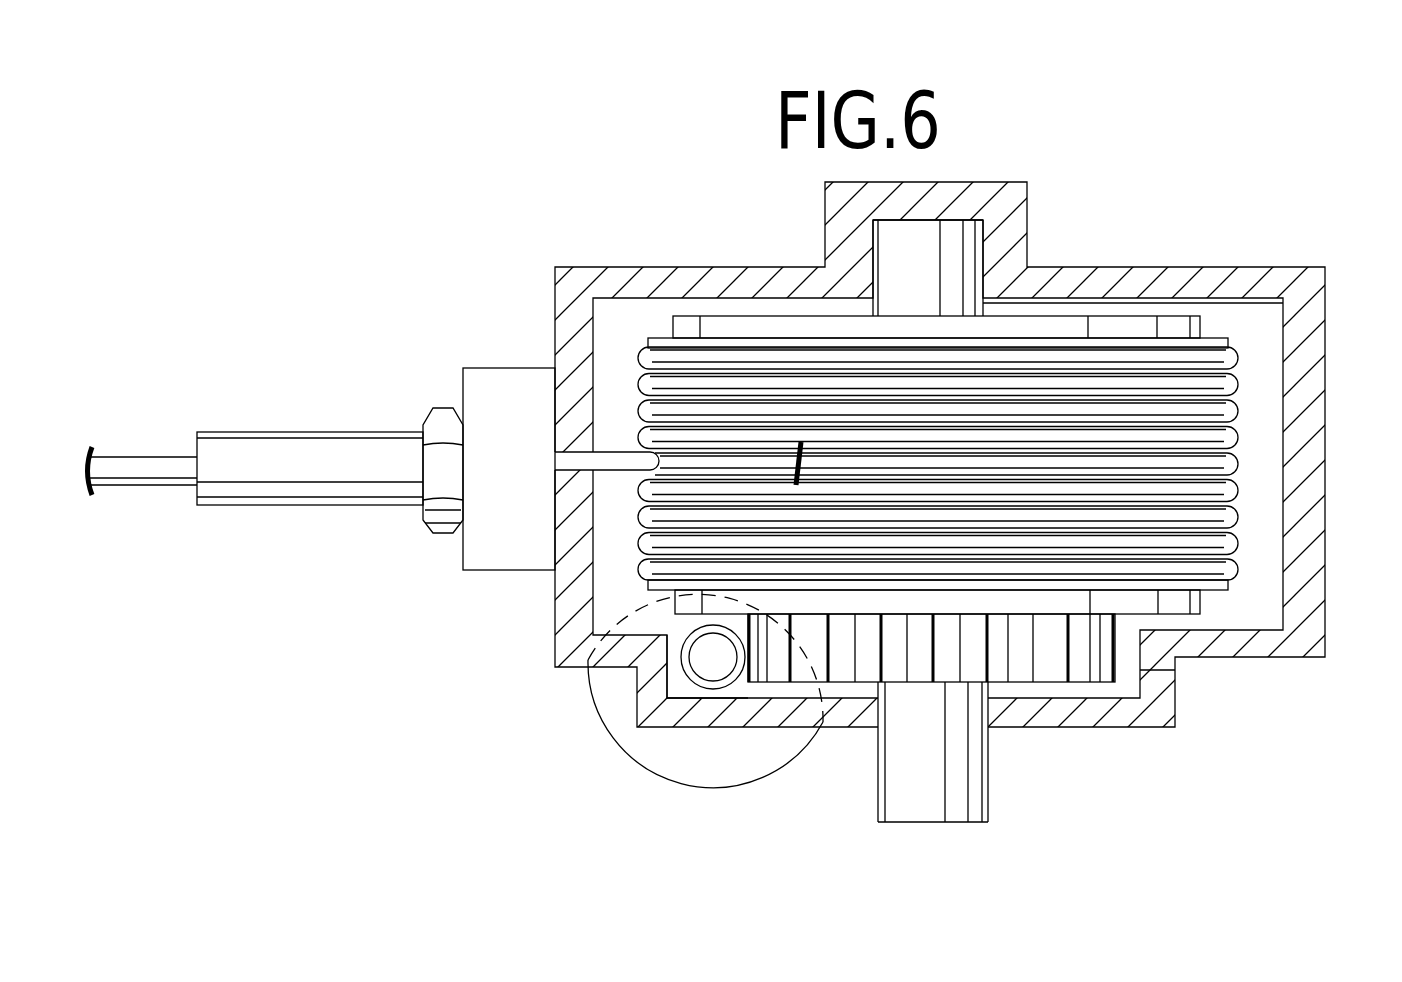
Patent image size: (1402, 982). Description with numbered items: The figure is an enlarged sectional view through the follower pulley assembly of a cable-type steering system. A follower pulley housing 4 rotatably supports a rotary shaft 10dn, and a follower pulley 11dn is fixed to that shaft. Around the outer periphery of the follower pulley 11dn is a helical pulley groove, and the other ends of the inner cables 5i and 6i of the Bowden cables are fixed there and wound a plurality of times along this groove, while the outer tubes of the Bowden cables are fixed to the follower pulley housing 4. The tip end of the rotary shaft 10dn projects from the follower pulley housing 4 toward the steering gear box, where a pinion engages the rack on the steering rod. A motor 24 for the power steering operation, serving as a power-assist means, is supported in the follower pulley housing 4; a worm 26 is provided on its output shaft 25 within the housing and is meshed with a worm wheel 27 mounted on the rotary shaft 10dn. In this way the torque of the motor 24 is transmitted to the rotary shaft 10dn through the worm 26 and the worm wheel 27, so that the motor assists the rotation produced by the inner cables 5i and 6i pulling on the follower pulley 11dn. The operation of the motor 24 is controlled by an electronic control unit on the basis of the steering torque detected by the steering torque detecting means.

The follower pulley housing 4 is at (1280, 282).
The inner cable 5i is at (1225, 376).
The inner cable 6i is at (1223, 538).
The rotary shaft 10dn is at (965, 763).
The follower pulley 11dn is at (1178, 322).
The motor for power steering operation 24 is at (596, 716).
The output shaft 25 is at (713, 660).
The worm 26 is at (660, 690).
The worm wheel 27 is at (1073, 652).